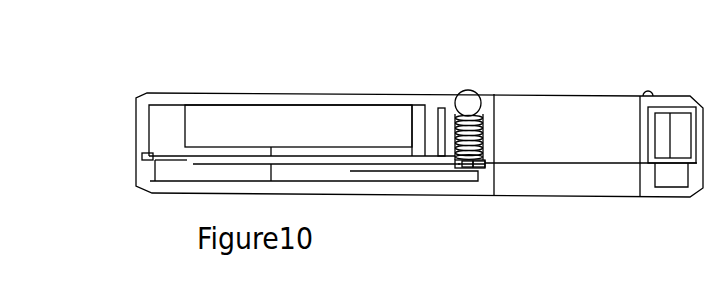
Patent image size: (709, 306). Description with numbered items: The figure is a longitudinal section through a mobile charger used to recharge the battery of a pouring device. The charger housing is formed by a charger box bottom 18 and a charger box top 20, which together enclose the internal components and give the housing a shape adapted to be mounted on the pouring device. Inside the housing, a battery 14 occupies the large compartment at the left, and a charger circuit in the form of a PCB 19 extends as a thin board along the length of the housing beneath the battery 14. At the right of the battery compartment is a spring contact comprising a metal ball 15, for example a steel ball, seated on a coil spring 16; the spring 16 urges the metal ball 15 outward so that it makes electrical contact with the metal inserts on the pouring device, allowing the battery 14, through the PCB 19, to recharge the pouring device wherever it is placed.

The battery 14 is at (213, 126).
The metal ball 15 is at (467, 100).
The spring 16 is at (503, 99).
The charger box bottom 18 is at (140, 93).
The PCB 19 is at (142, 159).
The charger box top 20 is at (146, 179).